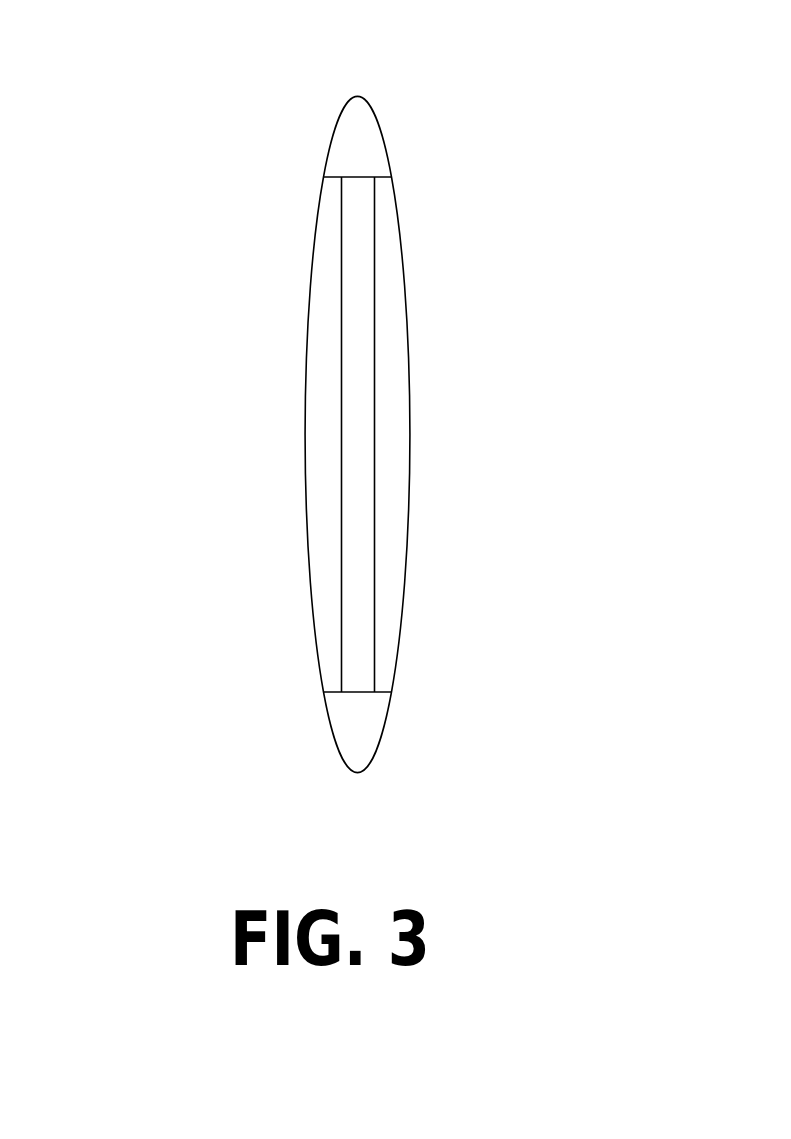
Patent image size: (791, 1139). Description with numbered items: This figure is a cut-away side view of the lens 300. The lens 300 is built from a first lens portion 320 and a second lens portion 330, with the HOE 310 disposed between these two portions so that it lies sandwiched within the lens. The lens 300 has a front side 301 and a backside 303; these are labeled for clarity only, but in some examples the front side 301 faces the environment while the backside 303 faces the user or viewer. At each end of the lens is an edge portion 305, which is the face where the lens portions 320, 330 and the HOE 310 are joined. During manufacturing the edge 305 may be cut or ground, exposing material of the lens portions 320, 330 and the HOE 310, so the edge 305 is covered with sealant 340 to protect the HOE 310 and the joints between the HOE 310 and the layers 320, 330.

The lens 300 is at (127, 38).
The front side 301 is at (277, 513).
The backside 303 is at (455, 512).
The edge portion 305 is at (347, 167).
The HOE 310 is at (373, 418).
The first lens portion 320 is at (307, 333).
The second lens portion 330 is at (407, 337).
The sealant 340 is at (383, 137).